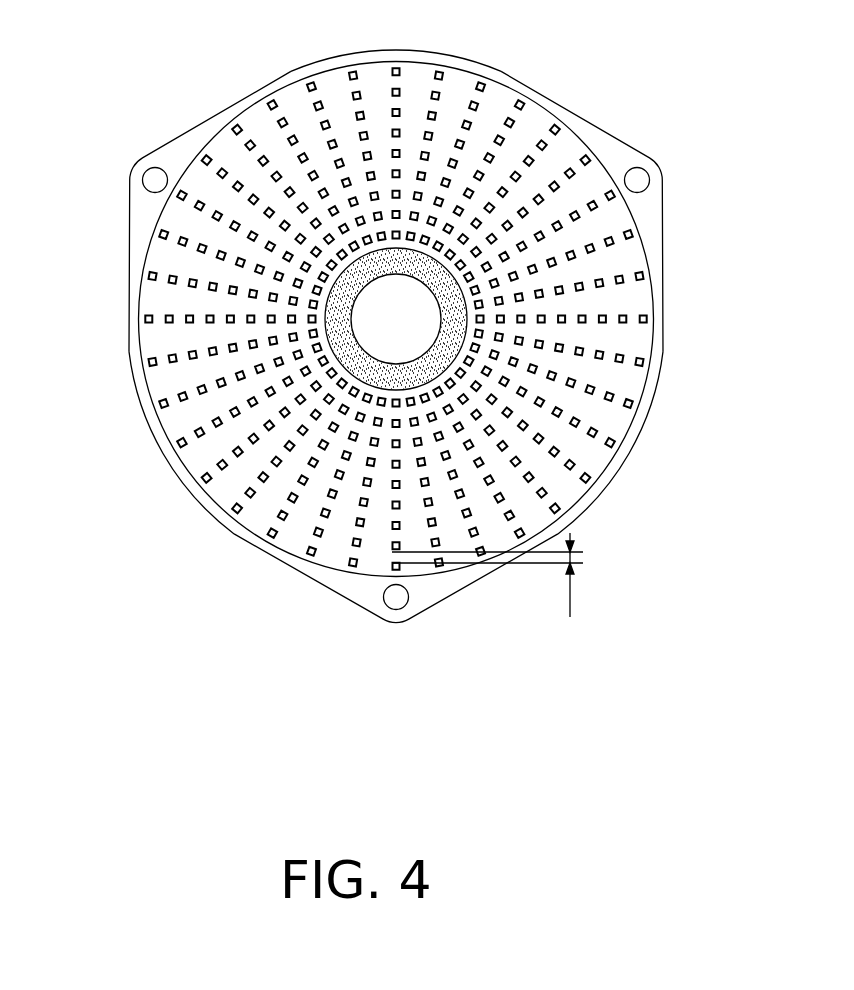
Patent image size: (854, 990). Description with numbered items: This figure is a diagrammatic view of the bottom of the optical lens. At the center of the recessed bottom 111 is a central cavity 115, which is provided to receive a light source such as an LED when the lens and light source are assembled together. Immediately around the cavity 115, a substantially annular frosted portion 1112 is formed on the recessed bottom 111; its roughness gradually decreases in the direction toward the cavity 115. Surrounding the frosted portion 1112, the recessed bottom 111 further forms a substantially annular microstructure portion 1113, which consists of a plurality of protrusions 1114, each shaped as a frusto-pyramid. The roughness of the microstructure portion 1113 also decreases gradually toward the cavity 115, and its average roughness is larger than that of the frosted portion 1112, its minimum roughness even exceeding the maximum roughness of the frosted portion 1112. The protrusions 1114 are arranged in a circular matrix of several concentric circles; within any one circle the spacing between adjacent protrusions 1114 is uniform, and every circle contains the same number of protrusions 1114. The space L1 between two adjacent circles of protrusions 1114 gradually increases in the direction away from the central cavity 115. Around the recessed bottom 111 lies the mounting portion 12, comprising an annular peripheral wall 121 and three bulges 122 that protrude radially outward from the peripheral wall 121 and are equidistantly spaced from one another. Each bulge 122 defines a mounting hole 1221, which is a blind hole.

The mounting portion 12 is at (447, 330).
The annular peripheral wall 121 is at (515, 87).
The bulge 122 is at (592, 140).
The mounting hole 1221 is at (637, 180).
The recessed bottom 111 is at (381, 288).
The frosted portion 1112 is at (332, 325).
The microstructure portion 1113 is at (283, 159).
The protrusion 1114 is at (224, 167).
The central cavity 115 is at (368, 300).
The space between adjacent circles L1 is at (487, 575).